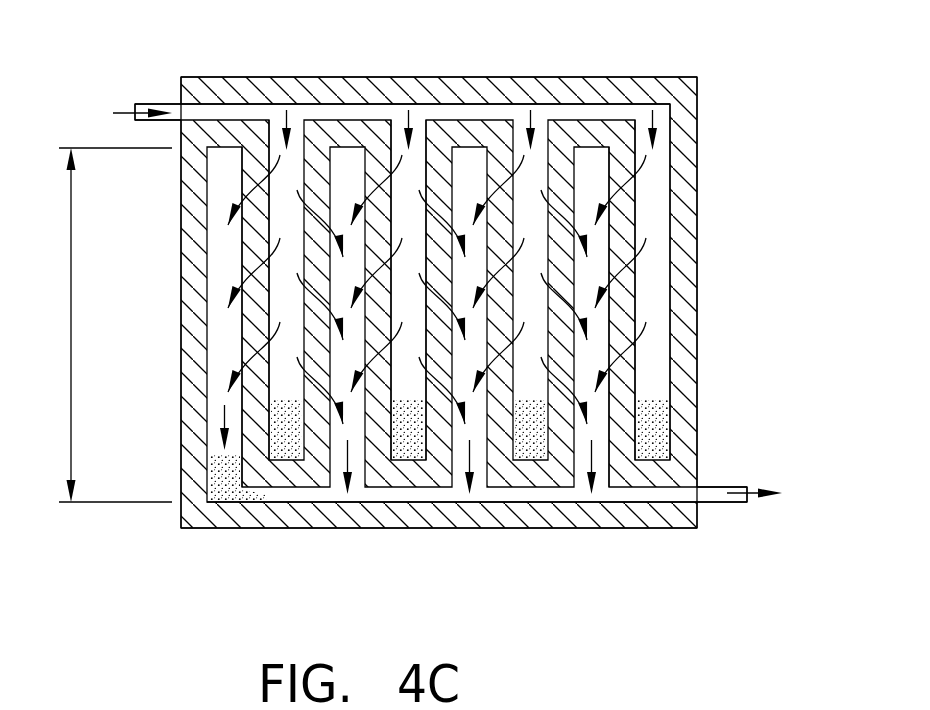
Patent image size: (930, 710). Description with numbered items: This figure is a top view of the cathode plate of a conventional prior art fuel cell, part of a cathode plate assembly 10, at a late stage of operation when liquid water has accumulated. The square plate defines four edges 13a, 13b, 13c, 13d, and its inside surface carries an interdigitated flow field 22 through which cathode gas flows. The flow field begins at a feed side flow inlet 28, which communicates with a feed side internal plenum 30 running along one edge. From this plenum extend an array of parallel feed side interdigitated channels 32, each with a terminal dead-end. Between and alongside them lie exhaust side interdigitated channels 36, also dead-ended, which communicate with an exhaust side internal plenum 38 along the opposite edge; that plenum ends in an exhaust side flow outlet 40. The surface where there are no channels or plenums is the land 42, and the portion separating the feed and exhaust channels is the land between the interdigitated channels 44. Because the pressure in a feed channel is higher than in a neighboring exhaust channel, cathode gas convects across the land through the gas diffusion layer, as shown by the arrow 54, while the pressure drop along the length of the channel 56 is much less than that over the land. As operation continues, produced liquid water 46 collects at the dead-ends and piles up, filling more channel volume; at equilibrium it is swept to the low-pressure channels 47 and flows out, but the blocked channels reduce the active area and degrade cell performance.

The cathode plate assembly 10 is at (740, 45).
The edge of cathode plate 13a is at (352, 77).
The edge of cathode plate 13b is at (698, 165).
The edge of cathode plate 13c is at (355, 530).
The edge of cathode plate 13d is at (182, 457).
The interdigitated flow field 22 is at (413, 150).
The feed side flow inlet 28 is at (178, 110).
The feed side internal plenum 30 is at (310, 115).
The feed side interdigitated channels 32 is at (610, 150).
The exhaust side interdigitated channels 36 is at (460, 483).
The exhaust side internal plenum 38 is at (293, 495).
The exhaust side flow outlet 40 is at (707, 493).
The land 42 is at (290, 258).
The land between the interdigitated channels 44 is at (377, 427).
The produced liquid water 46 is at (657, 445).
The low-pressure channels 47 is at (225, 490).
The arrow of convection flow 54 is at (612, 270).
The length of the channel 56 is at (70, 317).